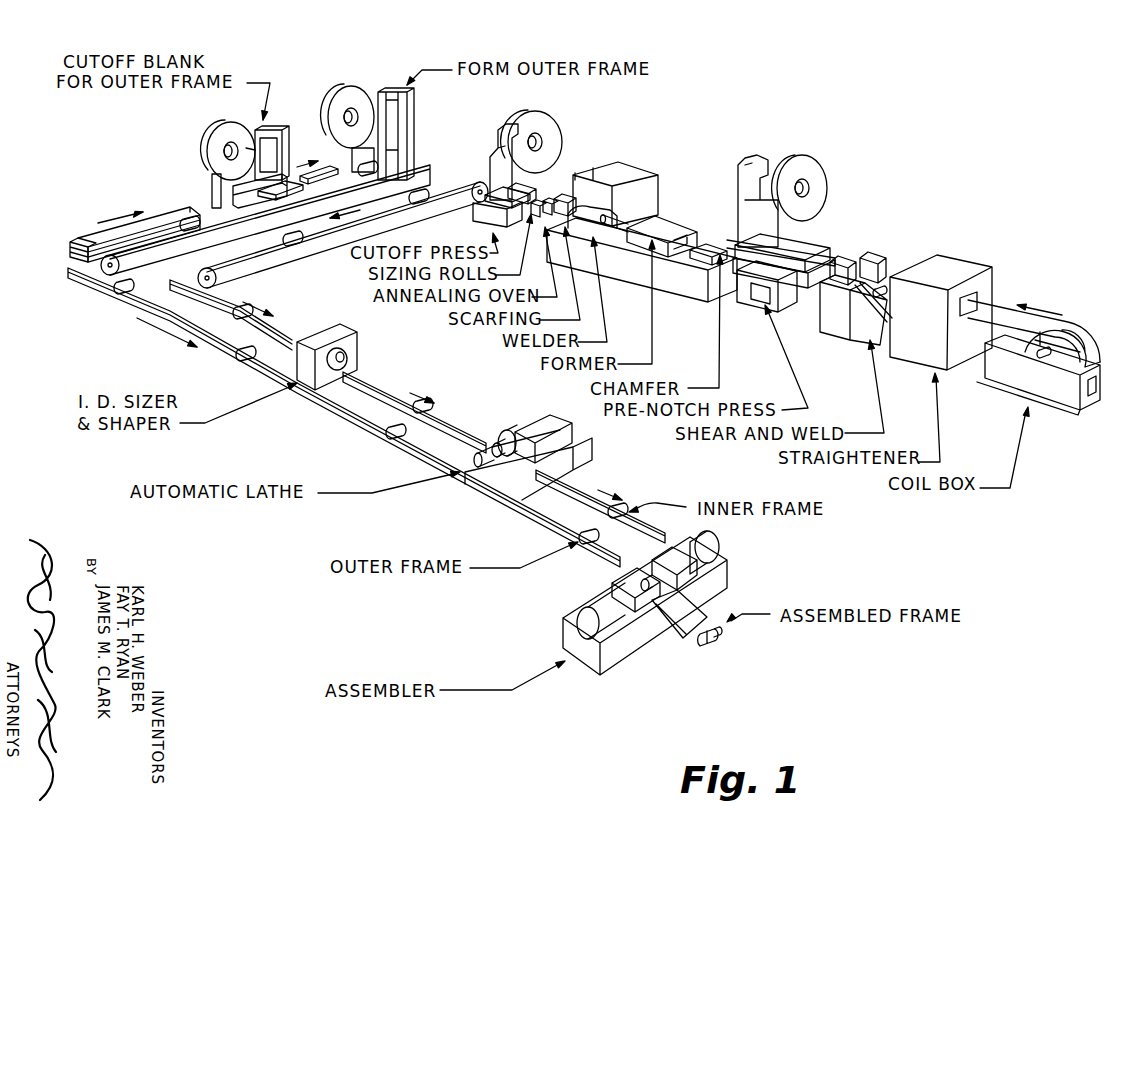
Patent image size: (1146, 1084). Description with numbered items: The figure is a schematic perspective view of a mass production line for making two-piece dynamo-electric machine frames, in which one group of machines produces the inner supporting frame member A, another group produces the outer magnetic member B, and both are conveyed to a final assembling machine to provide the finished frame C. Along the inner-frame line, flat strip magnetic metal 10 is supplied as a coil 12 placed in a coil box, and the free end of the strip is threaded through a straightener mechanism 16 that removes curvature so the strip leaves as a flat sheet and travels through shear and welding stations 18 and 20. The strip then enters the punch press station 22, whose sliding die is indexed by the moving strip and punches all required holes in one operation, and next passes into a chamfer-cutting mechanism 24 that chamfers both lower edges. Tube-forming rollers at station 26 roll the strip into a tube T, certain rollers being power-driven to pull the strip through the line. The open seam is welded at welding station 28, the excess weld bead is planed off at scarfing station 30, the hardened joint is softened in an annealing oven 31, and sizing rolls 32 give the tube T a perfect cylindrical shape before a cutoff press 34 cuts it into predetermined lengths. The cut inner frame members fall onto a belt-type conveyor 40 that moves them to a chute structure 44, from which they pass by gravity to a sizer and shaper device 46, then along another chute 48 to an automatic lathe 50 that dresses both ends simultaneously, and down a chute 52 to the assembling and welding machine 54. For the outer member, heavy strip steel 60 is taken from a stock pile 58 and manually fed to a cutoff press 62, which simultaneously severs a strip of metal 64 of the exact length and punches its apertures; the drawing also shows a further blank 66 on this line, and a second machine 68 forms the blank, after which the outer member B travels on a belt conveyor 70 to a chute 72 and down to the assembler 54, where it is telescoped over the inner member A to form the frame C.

The flat strip magnetic metal 10 is at (1002, 303).
The supply coil 12 is at (1078, 333).
The straightener mechanism 16 is at (968, 267).
The shear station 18 is at (883, 257).
The welding station 20 is at (852, 252).
The punch press station 22 is at (824, 188).
The chamfer-cutting mechanism 24 is at (725, 240).
The tube-forming rollers station 26 is at (677, 225).
The welding station 28 is at (643, 172).
The scarfing station 30 is at (585, 173).
The annealing oven 31 is at (560, 197).
The sizing rolls 32 is at (552, 144).
The cutoff press 34 is at (518, 113).
The belt-type conveyor 40 is at (400, 207).
The chute structure 44 is at (288, 340).
The sizer and shaper device 46 is at (347, 333).
The chute 48 is at (472, 433).
The automatic lathe 50 is at (535, 427).
The chute 52 is at (578, 483).
The assembling and welding machine 54 is at (722, 582).
The stock pile 58 is at (70, 244).
The heavy strip steel 60 is at (188, 207).
The cutoff press 62 is at (212, 156).
The strip of metal 64 is at (323, 170).
The outer frame blank 66 is at (287, 181).
The forming machine 68 is at (333, 108).
The belt conveyor 70 is at (158, 236).
The chute 72 is at (337, 415).
The inner supporting frame member A is at (627, 507).
The outer magnetic member B is at (585, 540).
The two-piece dynamo-electric machine frame C is at (706, 660).
The tube T is at (620, 240).